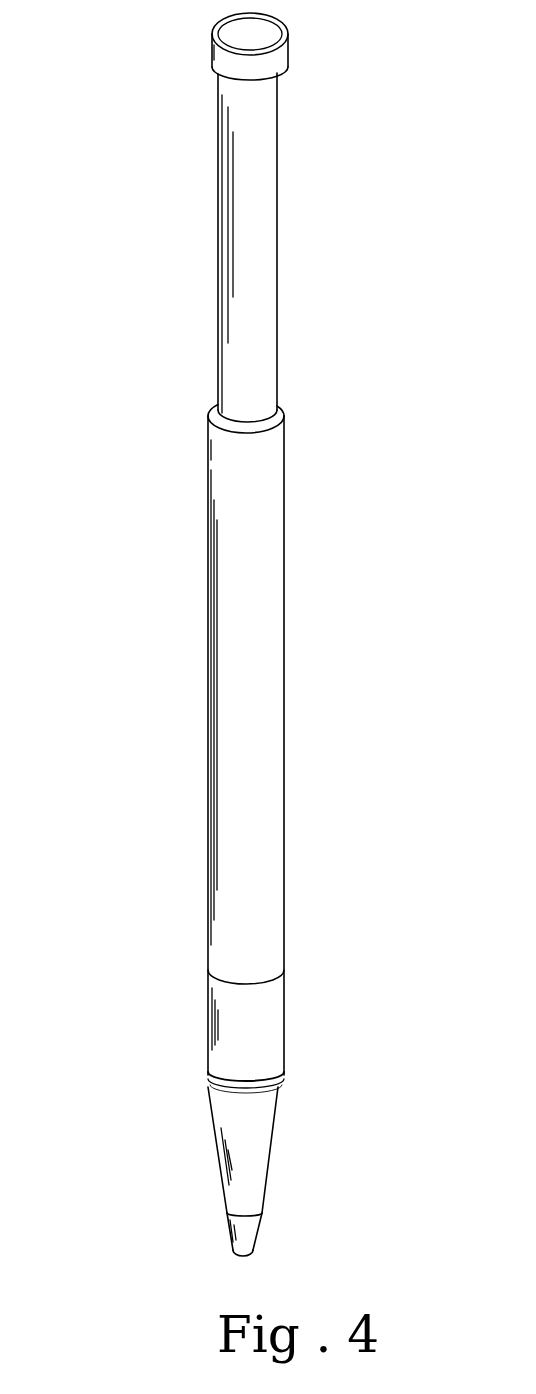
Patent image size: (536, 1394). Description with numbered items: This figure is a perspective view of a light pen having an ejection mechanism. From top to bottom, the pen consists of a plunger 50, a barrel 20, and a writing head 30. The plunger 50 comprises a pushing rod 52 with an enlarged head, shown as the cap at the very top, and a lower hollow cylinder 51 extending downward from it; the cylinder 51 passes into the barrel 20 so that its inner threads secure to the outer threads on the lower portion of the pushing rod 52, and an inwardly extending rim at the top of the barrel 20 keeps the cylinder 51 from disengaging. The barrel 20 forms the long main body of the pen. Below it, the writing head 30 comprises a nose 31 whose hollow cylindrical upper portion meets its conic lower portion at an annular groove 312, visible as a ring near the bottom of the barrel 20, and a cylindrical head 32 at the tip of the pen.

The barrel 20 is at (262, 715).
The writing head 30 is at (158, 1171).
The nose 31 is at (225, 1122).
The cylindrical head 32 is at (240, 1235).
The annular groove 312 is at (257, 1085).
The plunger 50 is at (342, 217).
The lower hollow cylinder 51 is at (258, 268).
The pushing rod 52 is at (256, 30).